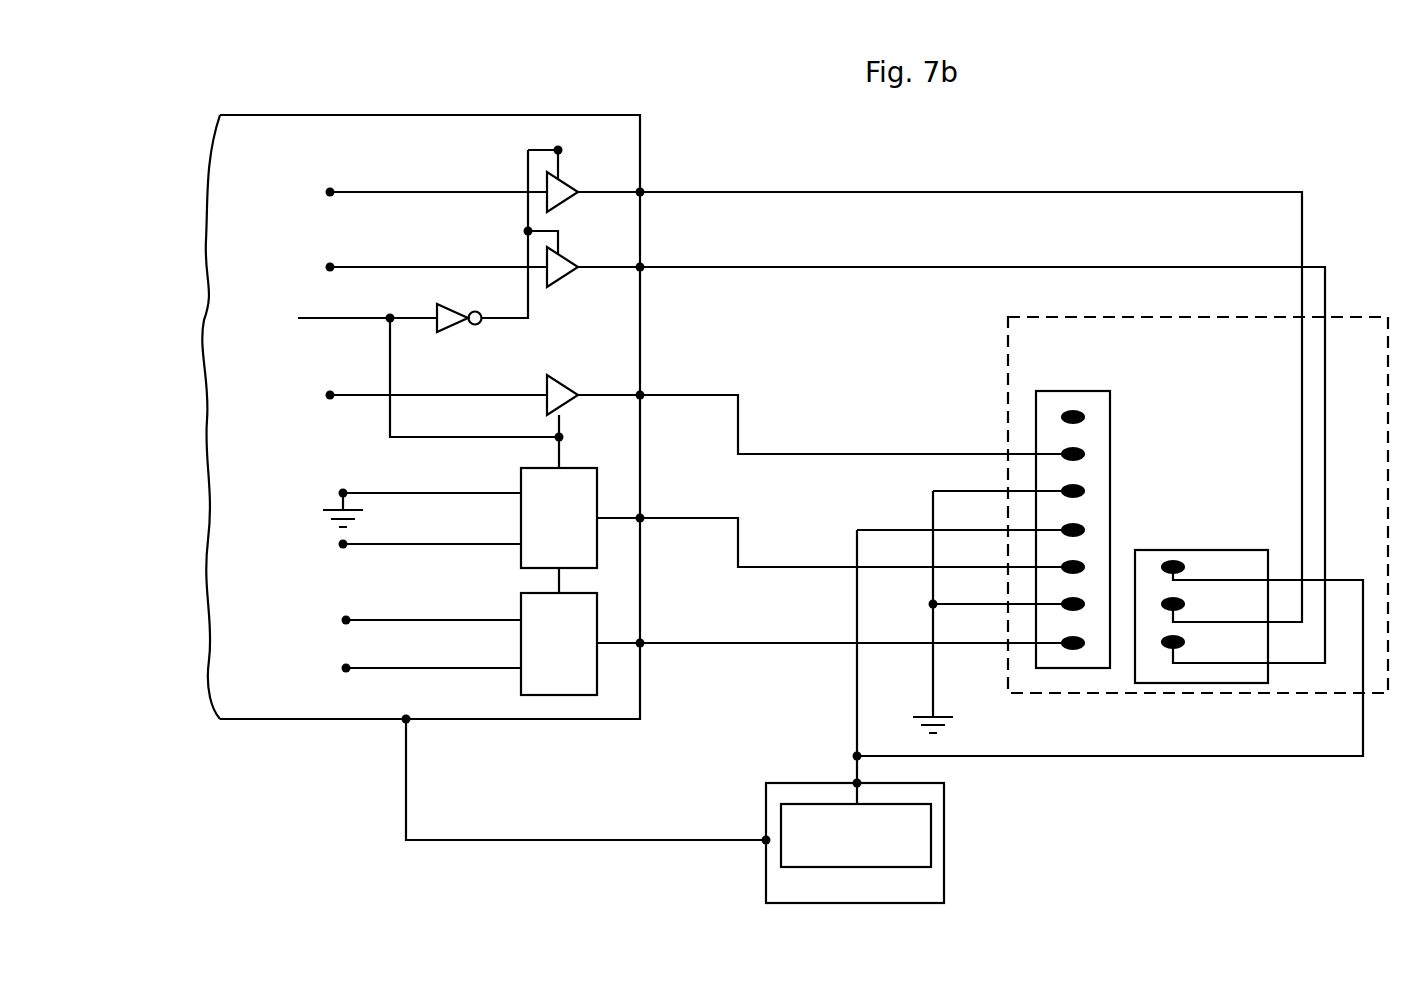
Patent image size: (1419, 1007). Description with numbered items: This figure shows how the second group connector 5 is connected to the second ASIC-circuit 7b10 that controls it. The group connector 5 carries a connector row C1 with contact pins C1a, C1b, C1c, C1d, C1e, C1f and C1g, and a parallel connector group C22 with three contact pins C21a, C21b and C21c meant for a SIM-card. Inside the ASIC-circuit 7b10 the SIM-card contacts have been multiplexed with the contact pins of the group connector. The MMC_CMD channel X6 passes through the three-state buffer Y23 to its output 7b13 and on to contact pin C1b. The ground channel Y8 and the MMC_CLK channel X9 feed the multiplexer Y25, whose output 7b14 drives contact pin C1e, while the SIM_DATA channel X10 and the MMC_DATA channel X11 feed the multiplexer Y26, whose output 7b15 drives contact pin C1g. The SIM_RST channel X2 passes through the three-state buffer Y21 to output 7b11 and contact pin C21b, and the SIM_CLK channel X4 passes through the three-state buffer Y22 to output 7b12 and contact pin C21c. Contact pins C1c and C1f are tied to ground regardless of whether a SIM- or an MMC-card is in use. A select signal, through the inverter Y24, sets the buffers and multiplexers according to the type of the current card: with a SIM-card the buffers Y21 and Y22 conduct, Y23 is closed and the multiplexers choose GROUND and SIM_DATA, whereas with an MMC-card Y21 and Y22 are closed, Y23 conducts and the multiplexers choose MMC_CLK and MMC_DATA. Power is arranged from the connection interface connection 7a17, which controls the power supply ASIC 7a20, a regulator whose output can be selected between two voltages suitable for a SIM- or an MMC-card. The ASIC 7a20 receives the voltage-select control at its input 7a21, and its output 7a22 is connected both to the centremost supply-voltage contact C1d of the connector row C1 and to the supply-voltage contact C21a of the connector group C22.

The second ASIC-circuit 7b10 is at (640, 132).
The output of 3-state buffer Y21 7b11 is at (640, 192).
The output of 3-state buffer Y22 7b12 is at (640, 267).
The output of 3-state buffer Y23 7b13 is at (640, 395).
The output of multiplexer Y25 7b14 is at (640, 518).
The output of multiplexer Y26 7b15 is at (640, 643).
The connection interface connection 7a17 is at (406, 722).
The power supply ASIC 7a20 is at (944, 840).
The input of power supply ASIC 7a21 is at (766, 838).
The output of power supply ASIC 7a22 is at (852, 768).
The second group connector 5 is at (1008, 320).
The connector row C1 is at (1036, 438).
The contact pin of connector row C1 C1a is at (1112, 417).
The contact pin of connector row C1 C1b is at (1112, 454).
The contact pin of connector row C1 C1c is at (1047, 492).
The centremost contact surface C1d is at (1010, 529).
The contact pin of connector row C1 C1e is at (1085, 567).
The contact pin of connector row C1 C1f is at (1085, 604).
The contact pin of connector row C1 C1g is at (1085, 643).
The connector group C22 is at (1210, 550).
The contact pin of connector group C22 C21a is at (1205, 567).
The contact pin of connector group C22 C21b is at (1206, 606).
The contact pin of connector group C22 C21c is at (1205, 646).
The channel reference X2 is at (330, 192).
The SIM_CLK channel reference X4 is at (330, 267).
The MMC_CMD channel reference X6 is at (330, 395).
The MMC_CLK channel reference X9 is at (343, 544).
The SIM_DATA channel reference X10 is at (346, 620).
The MMC_DATA channel reference X11 is at (346, 668).
The GROUND channel reference Y8 is at (343, 493).
The 3-state buffer Y21 is at (566, 180).
The 3-state buffer Y22 is at (566, 256).
The 3-state buffer Y23 is at (566, 382).
The inverter Y24 is at (440, 306).
The multiplexer Y25 is at (521, 480).
The multiplexer Y26 is at (521, 680).